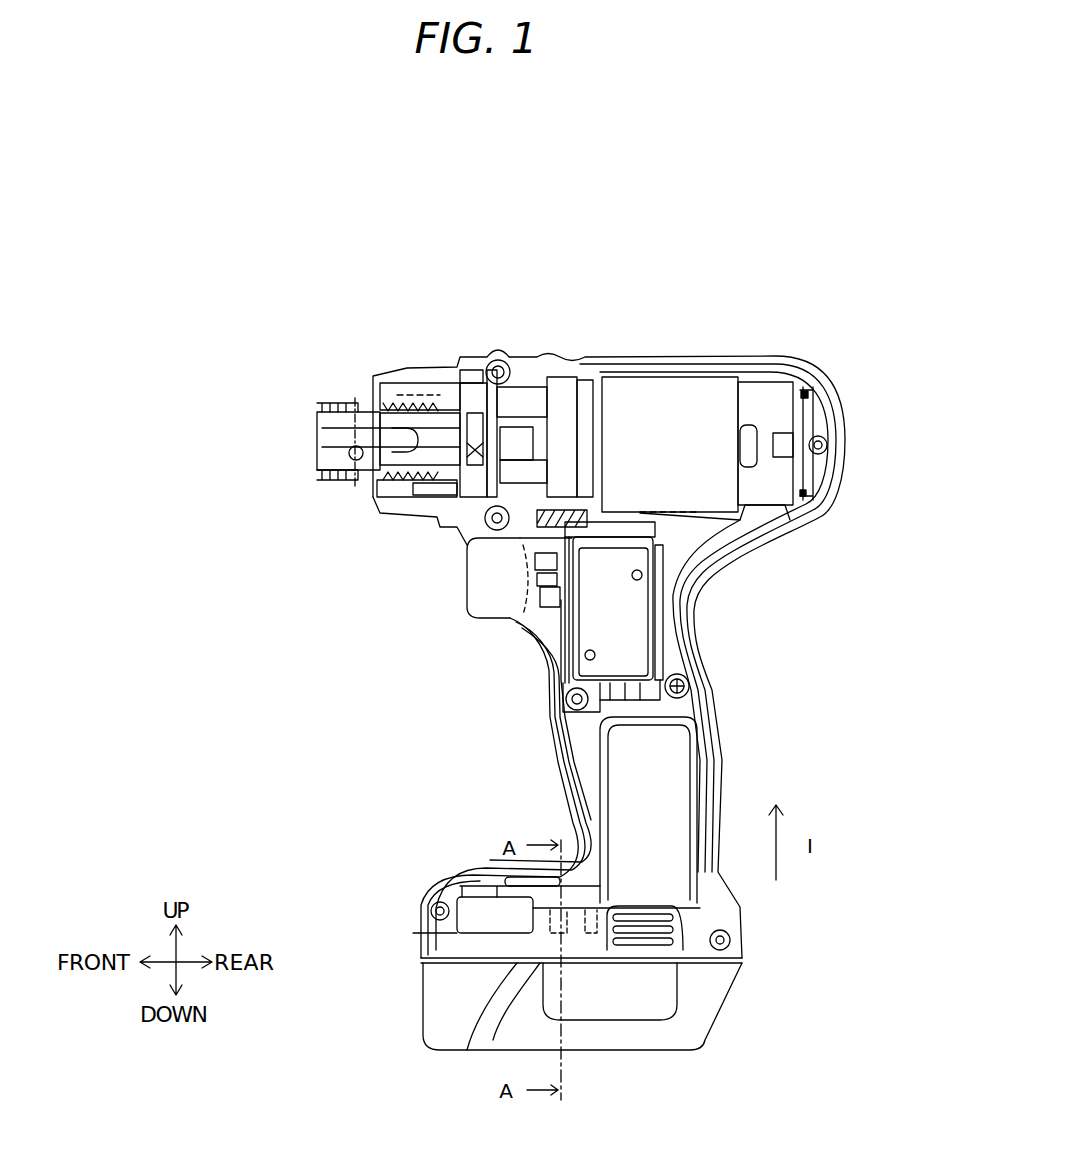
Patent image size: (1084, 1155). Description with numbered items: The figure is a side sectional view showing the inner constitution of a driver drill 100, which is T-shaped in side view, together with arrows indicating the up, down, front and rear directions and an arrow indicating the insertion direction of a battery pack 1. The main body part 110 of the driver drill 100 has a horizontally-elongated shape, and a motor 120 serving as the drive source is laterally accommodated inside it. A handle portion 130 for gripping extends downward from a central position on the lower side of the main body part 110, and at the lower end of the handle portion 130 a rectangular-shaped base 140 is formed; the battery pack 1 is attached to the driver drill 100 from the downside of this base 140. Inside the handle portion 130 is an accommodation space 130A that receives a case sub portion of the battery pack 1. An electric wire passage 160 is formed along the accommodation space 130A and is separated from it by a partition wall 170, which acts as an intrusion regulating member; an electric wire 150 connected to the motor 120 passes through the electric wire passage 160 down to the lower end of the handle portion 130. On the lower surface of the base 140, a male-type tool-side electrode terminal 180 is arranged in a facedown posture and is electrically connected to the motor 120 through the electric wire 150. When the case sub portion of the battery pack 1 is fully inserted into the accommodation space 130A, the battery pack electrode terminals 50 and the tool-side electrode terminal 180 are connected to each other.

The battery pack 1 is at (423, 993).
The driver drill 100 is at (612, 347).
The main body part 110 is at (807, 358).
The motor 120 is at (708, 385).
The handle portion 130 is at (700, 669).
The accommodation space 130A is at (688, 747).
The base 140 is at (432, 888).
The electric wire 150 is at (563, 730).
The electric wire passage 160 is at (585, 757).
The partition wall 170 is at (600, 796).
The electrode terminals 50 is at (560, 932).
The tool-side electrode terminal 180 is at (590, 932).